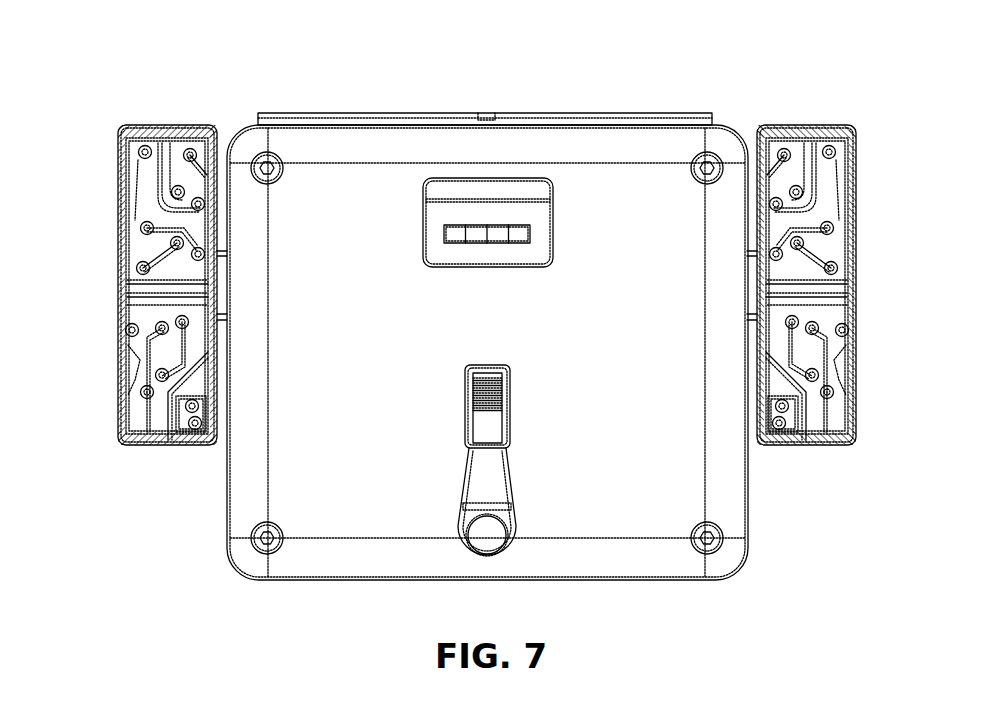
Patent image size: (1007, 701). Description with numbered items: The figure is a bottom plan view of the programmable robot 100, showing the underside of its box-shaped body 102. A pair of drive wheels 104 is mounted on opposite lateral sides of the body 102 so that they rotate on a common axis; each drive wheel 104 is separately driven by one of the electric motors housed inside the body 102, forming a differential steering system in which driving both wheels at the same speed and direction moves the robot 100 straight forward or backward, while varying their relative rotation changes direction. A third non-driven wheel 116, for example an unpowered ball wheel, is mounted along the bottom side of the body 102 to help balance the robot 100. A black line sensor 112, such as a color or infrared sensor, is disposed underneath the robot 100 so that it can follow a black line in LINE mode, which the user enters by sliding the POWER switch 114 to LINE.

The programmable robot 100 is at (475, 297).
The body 102 is at (348, 113).
The drive wheels 104 is at (117, 338).
The black line sensor 112 is at (452, 235).
The POWER switch 114 is at (485, 393).
The third non-driven wheel 116 is at (485, 535).